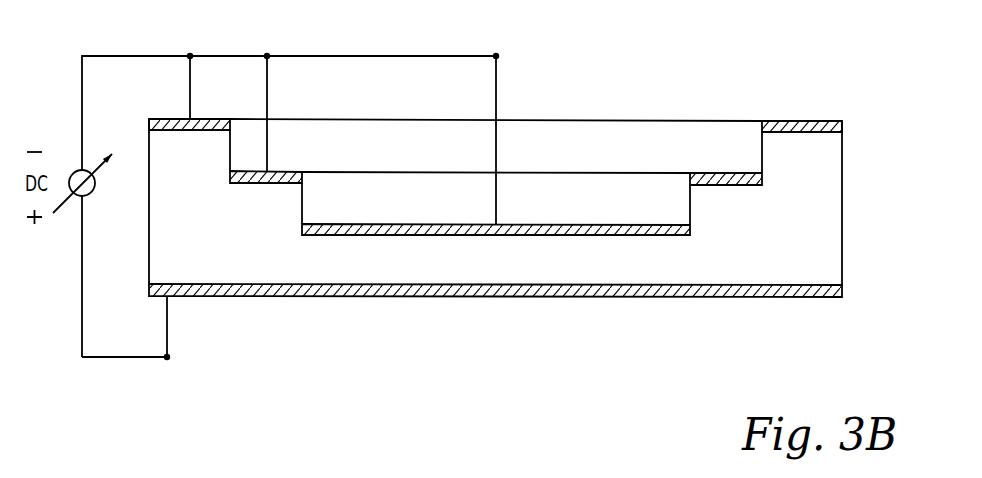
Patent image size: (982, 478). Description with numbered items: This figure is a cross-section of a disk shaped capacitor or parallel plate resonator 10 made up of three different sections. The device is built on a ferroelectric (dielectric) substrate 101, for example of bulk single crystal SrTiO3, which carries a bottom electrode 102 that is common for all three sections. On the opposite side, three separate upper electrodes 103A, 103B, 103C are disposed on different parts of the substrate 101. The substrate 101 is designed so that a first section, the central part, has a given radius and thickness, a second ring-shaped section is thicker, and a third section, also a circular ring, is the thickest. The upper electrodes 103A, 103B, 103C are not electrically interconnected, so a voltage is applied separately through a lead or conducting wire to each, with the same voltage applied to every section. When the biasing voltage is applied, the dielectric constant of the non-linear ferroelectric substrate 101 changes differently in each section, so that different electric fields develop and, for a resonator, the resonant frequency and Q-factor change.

The disk shaped capacitor or parallel plate resonator 10 is at (286, 352).
The ferroelectric substrate 101 is at (815, 203).
The bottom electrode 102 is at (648, 297).
The upper electrode 103A is at (617, 224).
The upper electrode 103B is at (722, 173).
The upper electrode 103C is at (801, 121).